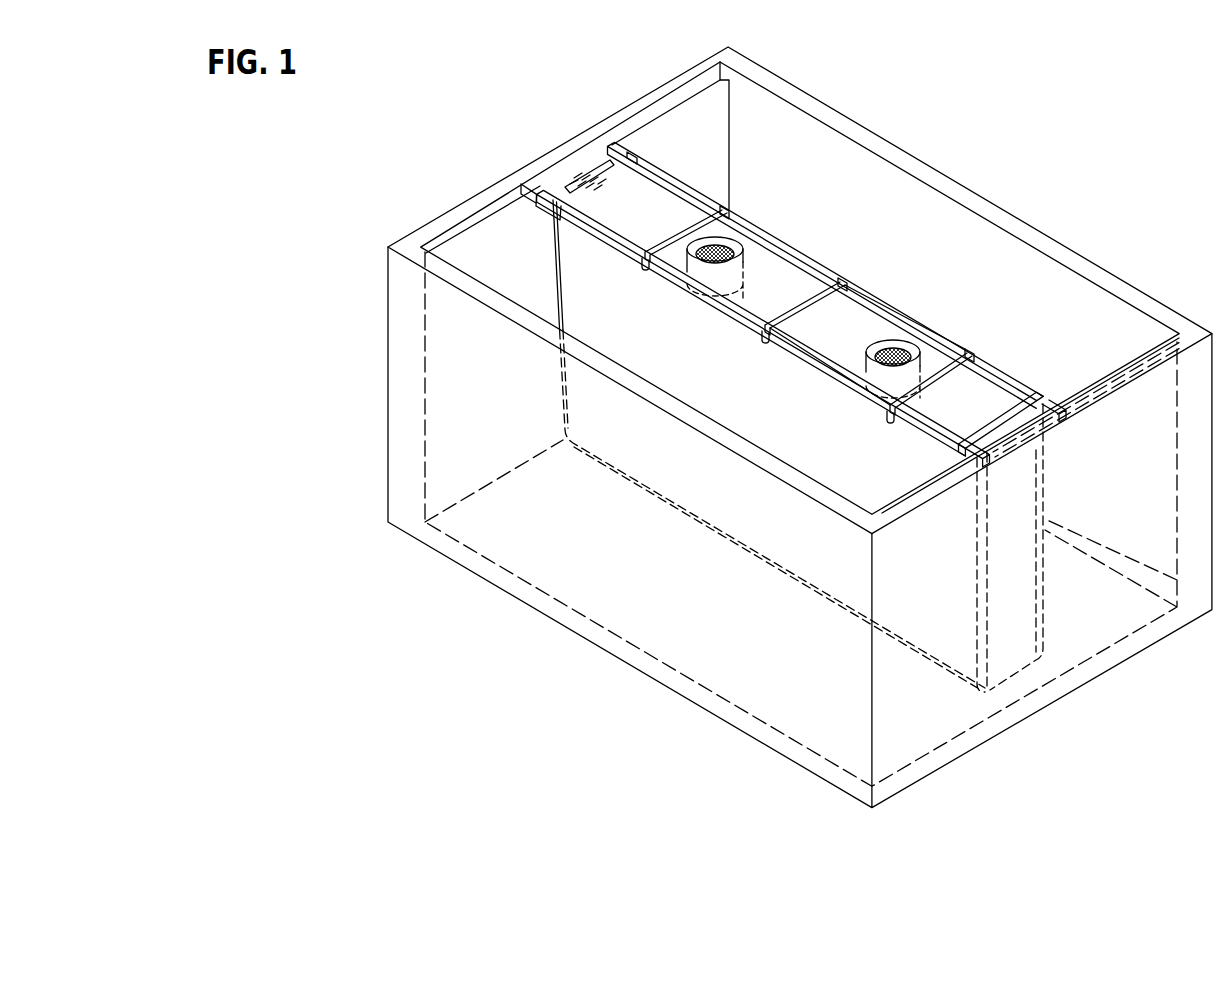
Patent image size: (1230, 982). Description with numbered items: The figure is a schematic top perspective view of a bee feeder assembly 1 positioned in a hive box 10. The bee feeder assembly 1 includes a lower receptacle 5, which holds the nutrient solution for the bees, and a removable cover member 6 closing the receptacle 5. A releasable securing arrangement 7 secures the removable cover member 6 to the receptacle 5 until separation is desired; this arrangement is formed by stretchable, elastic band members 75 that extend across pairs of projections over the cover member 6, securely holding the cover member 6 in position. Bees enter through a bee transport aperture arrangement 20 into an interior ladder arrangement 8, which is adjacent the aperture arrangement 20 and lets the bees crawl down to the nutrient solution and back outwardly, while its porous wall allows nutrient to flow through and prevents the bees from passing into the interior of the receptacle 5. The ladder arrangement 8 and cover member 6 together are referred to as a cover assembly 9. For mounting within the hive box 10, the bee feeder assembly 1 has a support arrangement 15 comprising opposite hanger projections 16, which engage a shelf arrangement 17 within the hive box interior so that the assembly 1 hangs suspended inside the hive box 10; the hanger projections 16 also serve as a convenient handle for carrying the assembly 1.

The bee feeder assembly 1 is at (934, 267).
The lower receptacle 5 is at (796, 409).
The removable cover member 6 is at (841, 326).
The releasable securing arrangement 7 is at (741, 207).
The interior ladder arrangement 8 is at (704, 263).
The cover assembly 9 is at (972, 387).
The hive box 10 is at (1030, 220).
The support arrangement 15 is at (580, 165).
The hanger projections 16 is at (553, 181).
The shelf arrangement 17 is at (712, 94).
The bee transport aperture arrangement 20 is at (717, 241).
The stretchable band members 75 is at (673, 229).